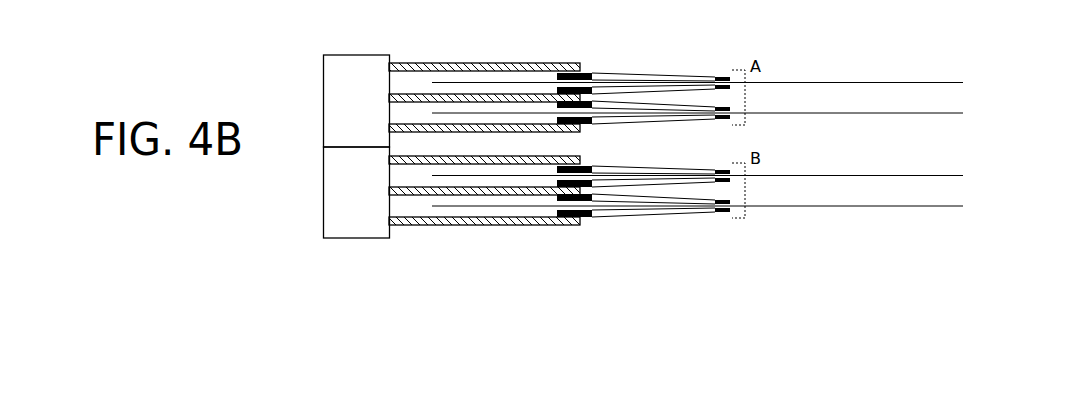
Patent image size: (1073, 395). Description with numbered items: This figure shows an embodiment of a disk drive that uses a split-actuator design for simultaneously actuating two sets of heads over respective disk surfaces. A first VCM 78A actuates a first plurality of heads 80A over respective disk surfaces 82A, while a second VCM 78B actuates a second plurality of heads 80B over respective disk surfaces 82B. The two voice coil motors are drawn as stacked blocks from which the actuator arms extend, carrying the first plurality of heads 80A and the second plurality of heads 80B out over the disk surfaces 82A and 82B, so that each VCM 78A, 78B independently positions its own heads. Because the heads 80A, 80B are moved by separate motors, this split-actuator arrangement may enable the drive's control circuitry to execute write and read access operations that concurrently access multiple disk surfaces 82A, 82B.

The first VCM 78A is at (323, 61).
The second VCM 78B is at (323, 154).
The first plurality of heads 80A is at (721, 74).
The second plurality of heads 80B is at (722, 166).
The disk surfaces 82A is at (957, 78).
The disk surfaces 82B is at (955, 171).